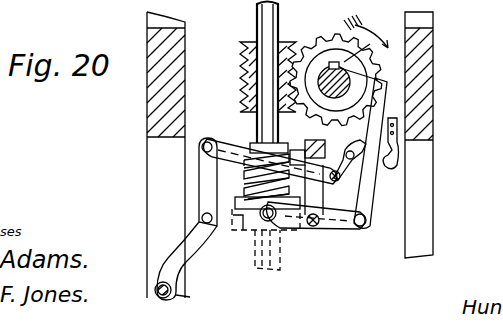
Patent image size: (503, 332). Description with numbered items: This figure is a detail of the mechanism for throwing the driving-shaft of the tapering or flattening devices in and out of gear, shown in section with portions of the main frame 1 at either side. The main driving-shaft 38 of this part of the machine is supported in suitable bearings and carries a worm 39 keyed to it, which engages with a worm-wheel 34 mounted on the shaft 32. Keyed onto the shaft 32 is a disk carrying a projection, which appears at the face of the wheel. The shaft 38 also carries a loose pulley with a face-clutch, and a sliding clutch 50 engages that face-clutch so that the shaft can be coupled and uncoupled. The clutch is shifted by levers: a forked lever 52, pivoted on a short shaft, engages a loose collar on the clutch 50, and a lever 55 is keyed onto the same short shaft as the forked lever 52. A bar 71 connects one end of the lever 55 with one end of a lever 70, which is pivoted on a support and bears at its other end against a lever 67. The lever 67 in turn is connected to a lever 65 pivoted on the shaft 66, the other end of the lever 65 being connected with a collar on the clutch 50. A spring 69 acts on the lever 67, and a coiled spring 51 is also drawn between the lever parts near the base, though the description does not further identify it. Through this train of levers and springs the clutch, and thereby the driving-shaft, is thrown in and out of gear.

The main frame 1 is at (442, 185).
The shaft 32 is at (339, 66).
The worm-wheel 34 is at (323, 33).
The main driving-shaft 38 is at (282, 15).
The worm 39 is at (241, 72).
The sliding clutch 50 is at (296, 232).
The spring 51 is at (255, 171).
The forked lever 52 is at (167, 250).
The lever 55 is at (207, 182).
The lever 65 is at (312, 218).
The shaft 66 is at (322, 222).
The lever 67 is at (371, 183).
The spring 69 is at (398, 146).
The lever 70 is at (355, 148).
The bar 71 is at (271, 177).